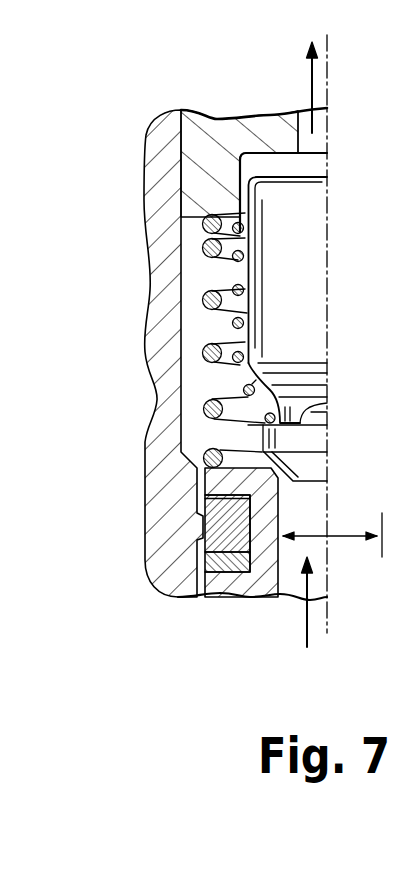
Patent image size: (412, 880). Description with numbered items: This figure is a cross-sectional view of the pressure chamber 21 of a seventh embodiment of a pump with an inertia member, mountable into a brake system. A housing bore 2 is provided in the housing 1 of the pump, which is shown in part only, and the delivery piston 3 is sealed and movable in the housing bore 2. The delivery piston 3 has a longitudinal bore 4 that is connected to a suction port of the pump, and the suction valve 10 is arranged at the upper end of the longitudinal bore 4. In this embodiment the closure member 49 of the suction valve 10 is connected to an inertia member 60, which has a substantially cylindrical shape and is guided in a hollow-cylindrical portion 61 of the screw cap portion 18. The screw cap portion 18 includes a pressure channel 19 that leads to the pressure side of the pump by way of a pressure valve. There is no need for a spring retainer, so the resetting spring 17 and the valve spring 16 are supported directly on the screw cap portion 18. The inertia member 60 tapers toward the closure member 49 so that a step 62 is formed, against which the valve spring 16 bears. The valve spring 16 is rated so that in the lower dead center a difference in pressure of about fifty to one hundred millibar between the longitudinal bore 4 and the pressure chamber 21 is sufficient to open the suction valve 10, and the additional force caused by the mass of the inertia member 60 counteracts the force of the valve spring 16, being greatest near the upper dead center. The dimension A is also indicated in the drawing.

The housing 1 is at (170, 532).
The housing bore 2 is at (193, 568).
The delivery piston 3 is at (245, 583).
The longitudinal bore 4 is at (293, 583).
The suction valve 10 is at (252, 442).
The valve spring 16 is at (238, 322).
The resetting spring 17 is at (203, 247).
The screw cap portion 18 is at (249, 121).
The pressure channel 19 is at (317, 142).
The pressure chamber 21 is at (218, 383).
The closure member 49 is at (317, 465).
The inertia member 60 is at (297, 273).
The hollow-cylindrical portion 61 is at (240, 185).
The step 62 is at (318, 404).
The dimension A is at (332, 534).